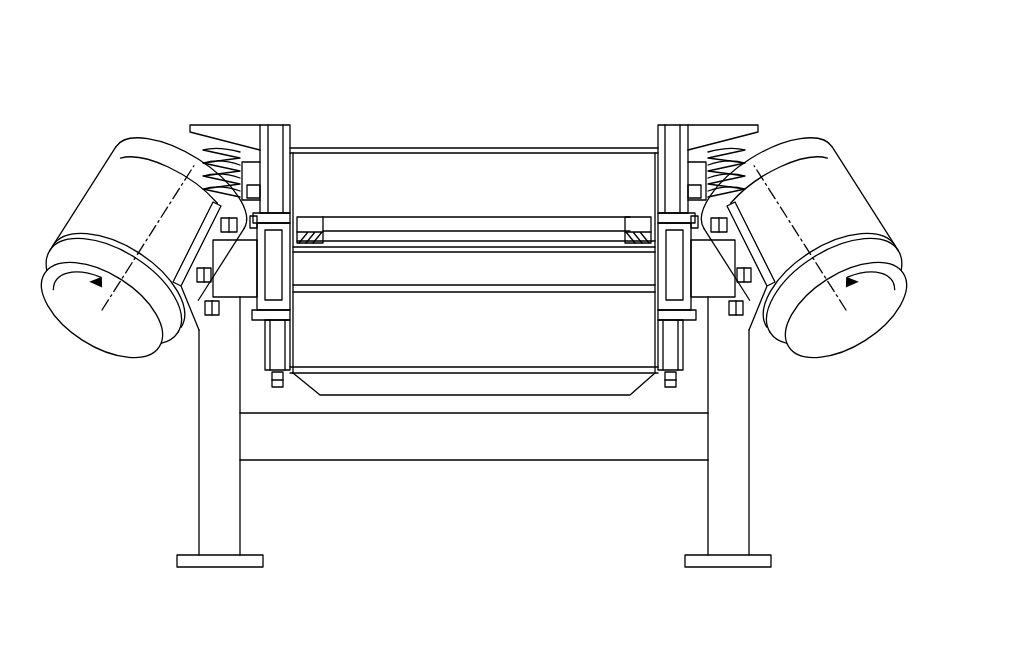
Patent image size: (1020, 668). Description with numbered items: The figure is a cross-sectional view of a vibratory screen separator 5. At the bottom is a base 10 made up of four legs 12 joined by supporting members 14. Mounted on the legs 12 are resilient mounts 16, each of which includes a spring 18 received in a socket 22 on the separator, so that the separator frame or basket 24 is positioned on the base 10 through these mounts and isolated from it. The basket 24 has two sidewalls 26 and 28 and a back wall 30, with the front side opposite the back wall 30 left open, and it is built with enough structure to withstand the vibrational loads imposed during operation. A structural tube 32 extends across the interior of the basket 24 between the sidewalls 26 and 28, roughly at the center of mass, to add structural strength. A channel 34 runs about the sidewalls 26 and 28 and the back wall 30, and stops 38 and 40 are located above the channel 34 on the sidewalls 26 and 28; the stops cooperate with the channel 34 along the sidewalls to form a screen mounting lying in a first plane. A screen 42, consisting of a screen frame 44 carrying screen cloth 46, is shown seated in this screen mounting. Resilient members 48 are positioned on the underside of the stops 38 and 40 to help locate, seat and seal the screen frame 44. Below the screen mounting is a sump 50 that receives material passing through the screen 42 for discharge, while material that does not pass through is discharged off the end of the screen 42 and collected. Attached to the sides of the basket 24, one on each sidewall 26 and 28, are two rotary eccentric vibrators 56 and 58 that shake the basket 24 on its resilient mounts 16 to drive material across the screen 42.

The separator 5 is at (178, 42).
The base 10 is at (198, 487).
The legs 12 is at (243, 517).
The supporting members 14 is at (534, 461).
The resilient mounts 16 is at (758, 143).
The spring 18 is at (755, 145).
The socket 22 is at (216, 124).
The separator frame or basket 24 is at (296, 127).
The sidewall 26 is at (298, 148).
The sidewall 28 is at (652, 150).
The back wall 30 is at (491, 147).
The structural tube 32 is at (494, 294).
The channel 34 is at (338, 249).
The stop 38 is at (291, 198).
The stop 40 is at (664, 200).
The screen 42 is at (491, 216).
The screen frame 44 is at (328, 219).
The screen cloth 46 is at (560, 214).
The resilient members 48 is at (300, 212).
The sump 50 is at (518, 393).
The rotary eccentric vibrator 56 is at (79, 203).
The rotary eccentric vibrator 58 is at (876, 198).